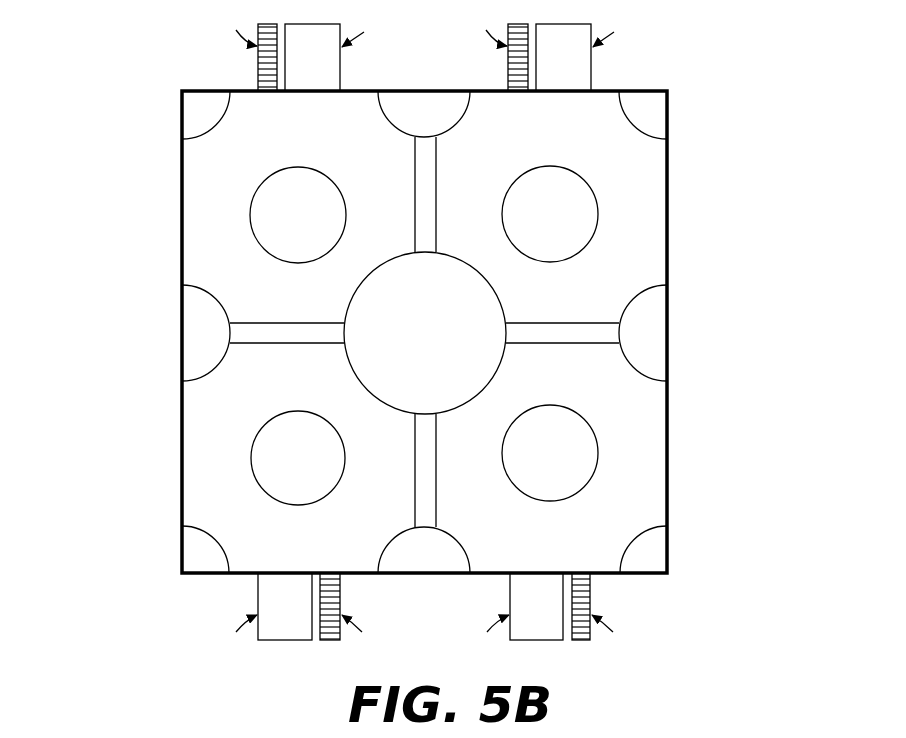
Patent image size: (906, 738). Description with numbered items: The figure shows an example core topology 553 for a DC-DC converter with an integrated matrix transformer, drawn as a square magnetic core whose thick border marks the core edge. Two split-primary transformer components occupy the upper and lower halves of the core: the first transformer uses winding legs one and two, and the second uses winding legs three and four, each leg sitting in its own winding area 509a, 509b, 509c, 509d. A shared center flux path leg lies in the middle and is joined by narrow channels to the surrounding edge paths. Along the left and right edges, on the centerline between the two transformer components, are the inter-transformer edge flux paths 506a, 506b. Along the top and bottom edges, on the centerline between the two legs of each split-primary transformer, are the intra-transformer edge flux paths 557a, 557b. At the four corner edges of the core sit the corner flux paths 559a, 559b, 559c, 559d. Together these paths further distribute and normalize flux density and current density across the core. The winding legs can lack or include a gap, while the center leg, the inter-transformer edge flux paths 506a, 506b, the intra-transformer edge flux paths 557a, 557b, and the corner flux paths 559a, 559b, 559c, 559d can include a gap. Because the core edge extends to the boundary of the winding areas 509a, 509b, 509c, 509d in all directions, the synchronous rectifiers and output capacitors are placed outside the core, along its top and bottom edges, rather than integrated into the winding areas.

The core topology 553 is at (91, 31).
The corner flux path 559a is at (199, 84).
The corner flux path 559b is at (651, 85).
The corner flux path 559c is at (643, 589).
The corner flux path 559d is at (200, 590).
The intra-transformer edge flux path 557a is at (409, 83).
The intra-transformer edge flux path 557b is at (400, 590).
The inter-transformer edge flux path 506a is at (172, 318).
The inter-transformer edge flux path 506b is at (677, 318).
The winding area 509a is at (275, 204).
The winding area 509b is at (574, 203).
The winding area 509c is at (573, 455).
The winding area 509d is at (274, 458).